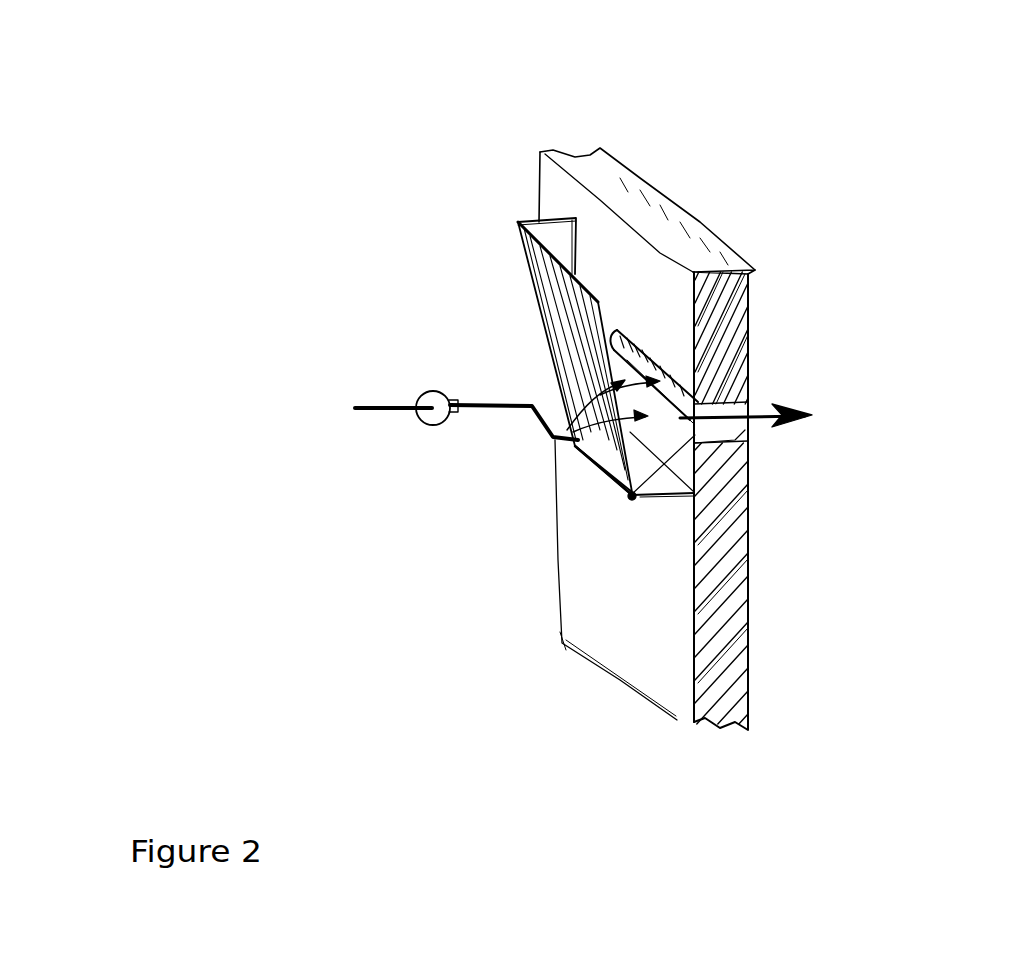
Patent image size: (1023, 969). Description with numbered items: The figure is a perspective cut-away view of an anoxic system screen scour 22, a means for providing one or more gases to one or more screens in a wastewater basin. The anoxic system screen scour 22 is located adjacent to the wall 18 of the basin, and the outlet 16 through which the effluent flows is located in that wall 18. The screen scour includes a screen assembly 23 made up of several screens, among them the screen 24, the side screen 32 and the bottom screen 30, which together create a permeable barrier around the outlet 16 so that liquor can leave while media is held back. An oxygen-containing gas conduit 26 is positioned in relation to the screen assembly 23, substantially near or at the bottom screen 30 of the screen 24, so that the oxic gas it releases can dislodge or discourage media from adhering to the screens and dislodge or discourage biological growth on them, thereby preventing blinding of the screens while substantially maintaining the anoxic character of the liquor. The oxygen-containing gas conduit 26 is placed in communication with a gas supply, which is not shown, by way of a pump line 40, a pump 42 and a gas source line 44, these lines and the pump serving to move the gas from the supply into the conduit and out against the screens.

The anoxic system screen scour 22 is at (392, 105).
The side screen 32 is at (518, 222).
The wall 18 is at (695, 250).
The screen assembly 23 is at (490, 248).
The screen 24 is at (548, 318).
The gas source line 44 is at (410, 400).
The pump 42 is at (422, 422).
The pump line 40 is at (540, 421).
The outlet 16 is at (735, 433).
The bottom screen 30 is at (658, 497).
The oxygen-containing gas conduit 26 is at (612, 472).